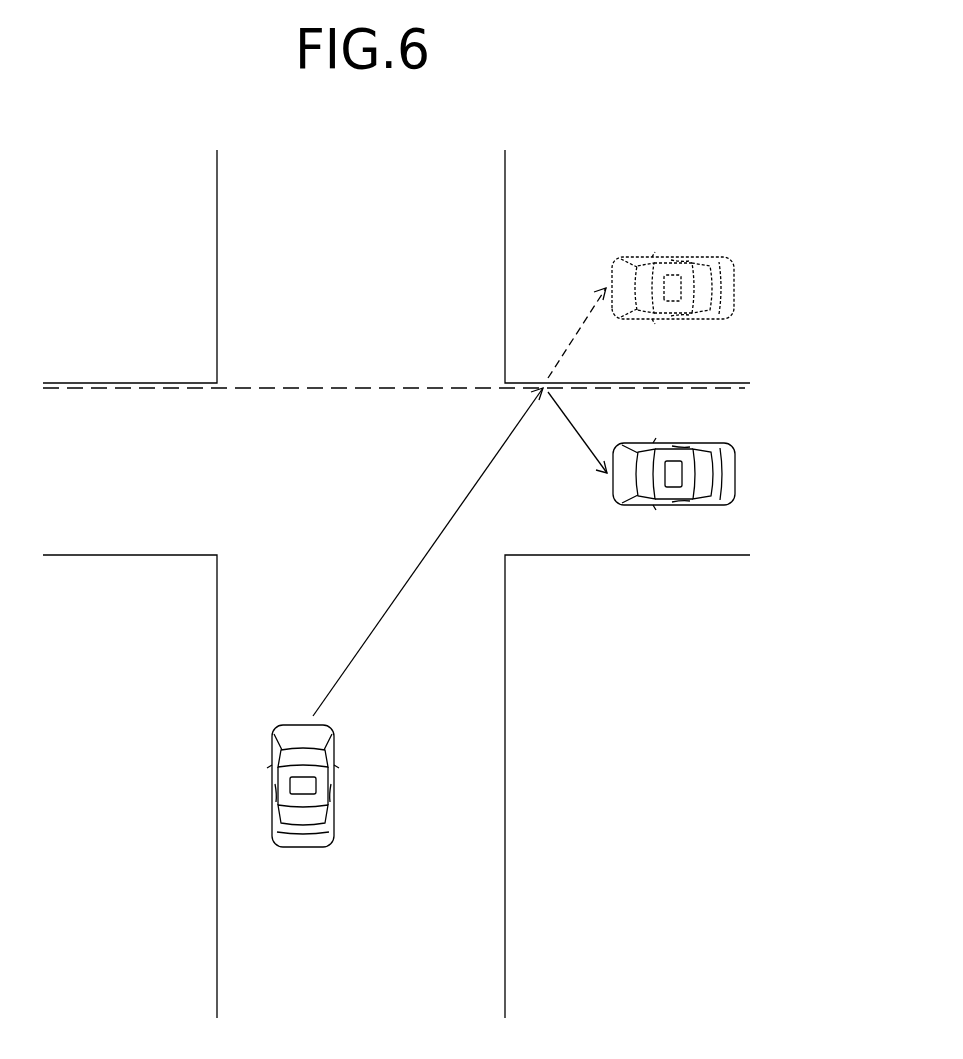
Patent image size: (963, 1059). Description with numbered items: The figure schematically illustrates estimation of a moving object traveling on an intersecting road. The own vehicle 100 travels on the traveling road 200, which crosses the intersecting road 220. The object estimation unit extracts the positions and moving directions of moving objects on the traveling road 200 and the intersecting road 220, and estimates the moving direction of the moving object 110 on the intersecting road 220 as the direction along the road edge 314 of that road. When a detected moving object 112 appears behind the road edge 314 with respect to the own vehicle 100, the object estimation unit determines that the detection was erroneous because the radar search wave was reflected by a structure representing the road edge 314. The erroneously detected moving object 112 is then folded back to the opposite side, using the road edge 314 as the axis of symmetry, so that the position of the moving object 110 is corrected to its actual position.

The traveling road 200 is at (357, 194).
The intersecting road 220 is at (88, 520).
The road edge 314 is at (660, 392).
The own vehicle 100 is at (300, 848).
The moving object 110 is at (690, 506).
The moving object 112 is at (668, 258).